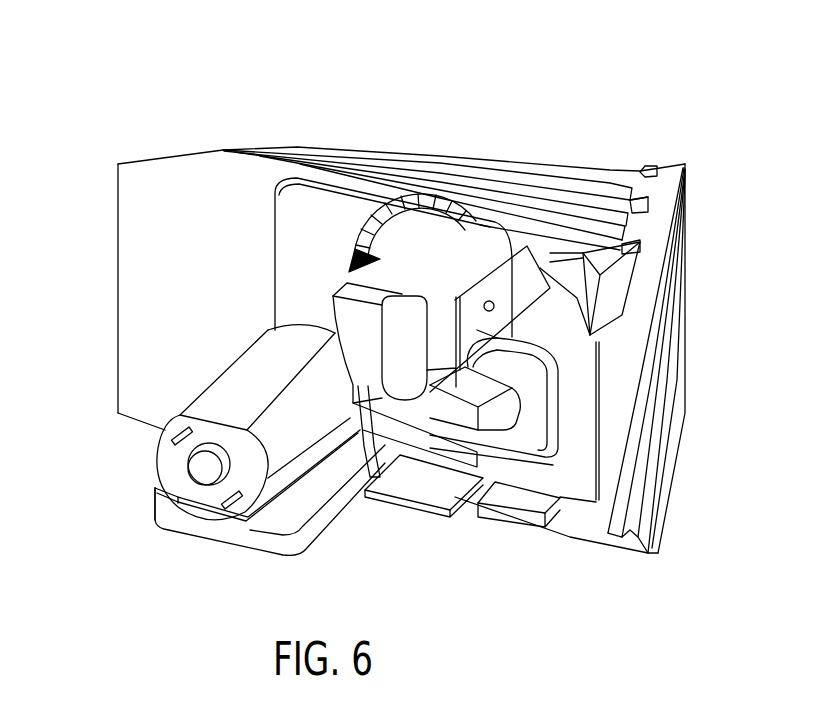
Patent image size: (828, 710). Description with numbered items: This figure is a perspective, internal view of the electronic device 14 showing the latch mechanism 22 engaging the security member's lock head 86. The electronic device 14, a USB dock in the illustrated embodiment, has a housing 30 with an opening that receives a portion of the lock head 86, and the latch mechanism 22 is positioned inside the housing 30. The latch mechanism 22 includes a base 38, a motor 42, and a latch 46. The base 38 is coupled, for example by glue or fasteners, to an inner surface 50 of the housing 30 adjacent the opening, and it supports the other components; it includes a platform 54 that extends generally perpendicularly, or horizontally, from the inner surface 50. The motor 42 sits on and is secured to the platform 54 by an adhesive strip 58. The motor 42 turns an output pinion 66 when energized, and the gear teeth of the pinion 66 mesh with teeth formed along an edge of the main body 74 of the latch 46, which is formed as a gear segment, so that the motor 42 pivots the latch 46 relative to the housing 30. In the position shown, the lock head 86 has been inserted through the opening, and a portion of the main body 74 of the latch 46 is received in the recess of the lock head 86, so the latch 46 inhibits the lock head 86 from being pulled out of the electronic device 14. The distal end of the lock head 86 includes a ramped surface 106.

The electronic device 14 is at (146, 137).
The latch mechanism 22 is at (126, 477).
The housing 30 is at (118, 291).
The base 38 is at (538, 445).
The motor 42 is at (166, 453).
The latch 46 is at (512, 270).
The inner surface 50 is at (123, 337).
The platform 54 is at (247, 542).
The adhesive strip 58 is at (187, 500).
The output pinion 66 is at (327, 340).
The main body 74 is at (393, 407).
The lock head 86 is at (460, 437).
The ramped surface 106 is at (428, 427).